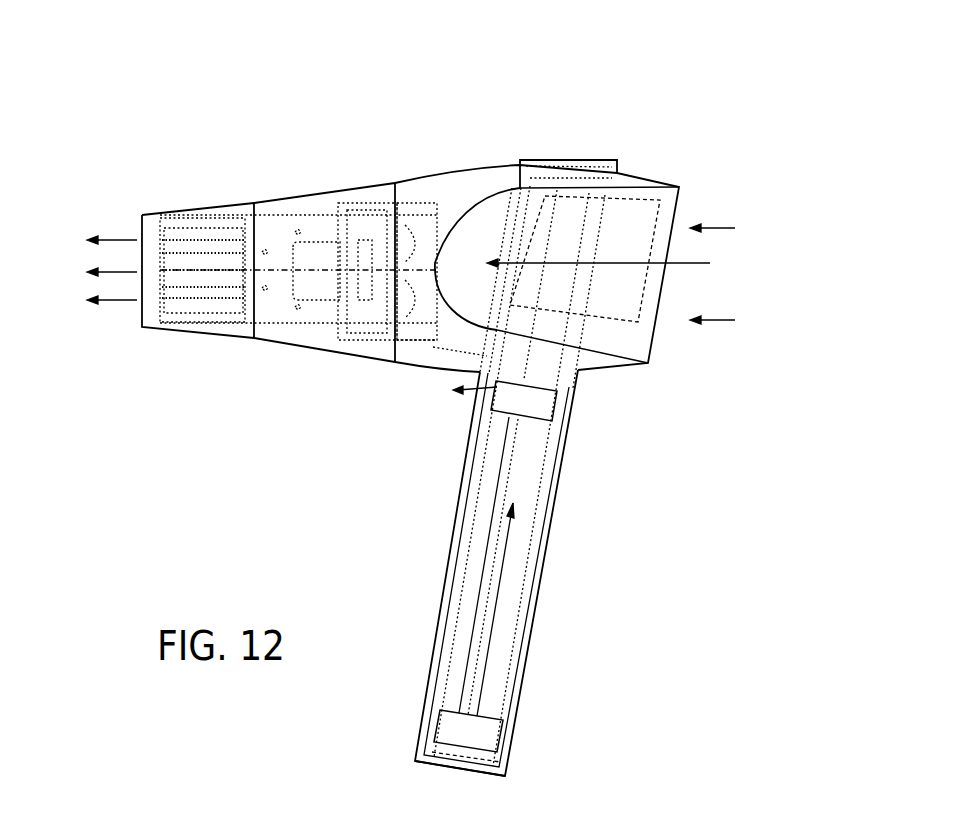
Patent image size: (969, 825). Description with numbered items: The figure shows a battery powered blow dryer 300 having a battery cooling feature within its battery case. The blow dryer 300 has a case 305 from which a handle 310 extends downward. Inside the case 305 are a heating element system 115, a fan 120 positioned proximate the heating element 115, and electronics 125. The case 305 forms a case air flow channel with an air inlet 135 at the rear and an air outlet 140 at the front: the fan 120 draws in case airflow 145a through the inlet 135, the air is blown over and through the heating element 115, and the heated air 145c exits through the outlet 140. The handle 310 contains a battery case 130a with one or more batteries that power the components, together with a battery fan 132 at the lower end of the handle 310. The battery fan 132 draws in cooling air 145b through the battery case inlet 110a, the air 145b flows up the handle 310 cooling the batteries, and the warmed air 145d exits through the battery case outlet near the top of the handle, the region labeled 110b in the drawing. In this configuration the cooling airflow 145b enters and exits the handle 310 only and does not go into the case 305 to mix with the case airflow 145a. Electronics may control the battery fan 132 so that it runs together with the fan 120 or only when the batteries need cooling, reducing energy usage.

The air outlet 140 is at (140, 230).
The heating element system 115 is at (190, 268).
The fan 120 is at (407, 230).
The case 305 is at (485, 170).
The electronics 125 is at (628, 215).
The air inlet 135 is at (680, 205).
The case airflow 145a is at (730, 262).
The heated air 145c is at (118, 303).
The heated air exiting battery case 145d is at (444, 388).
The handle 310 is at (550, 550).
The upper battery terminal 110b is at (505, 386).
The battery case 130a is at (488, 467).
The battery cooling air 145b is at (505, 628).
The battery case inlet 110a is at (500, 733).
The battery fan 132 is at (507, 766).
The battery powered blow dryer 300 is at (283, 452).